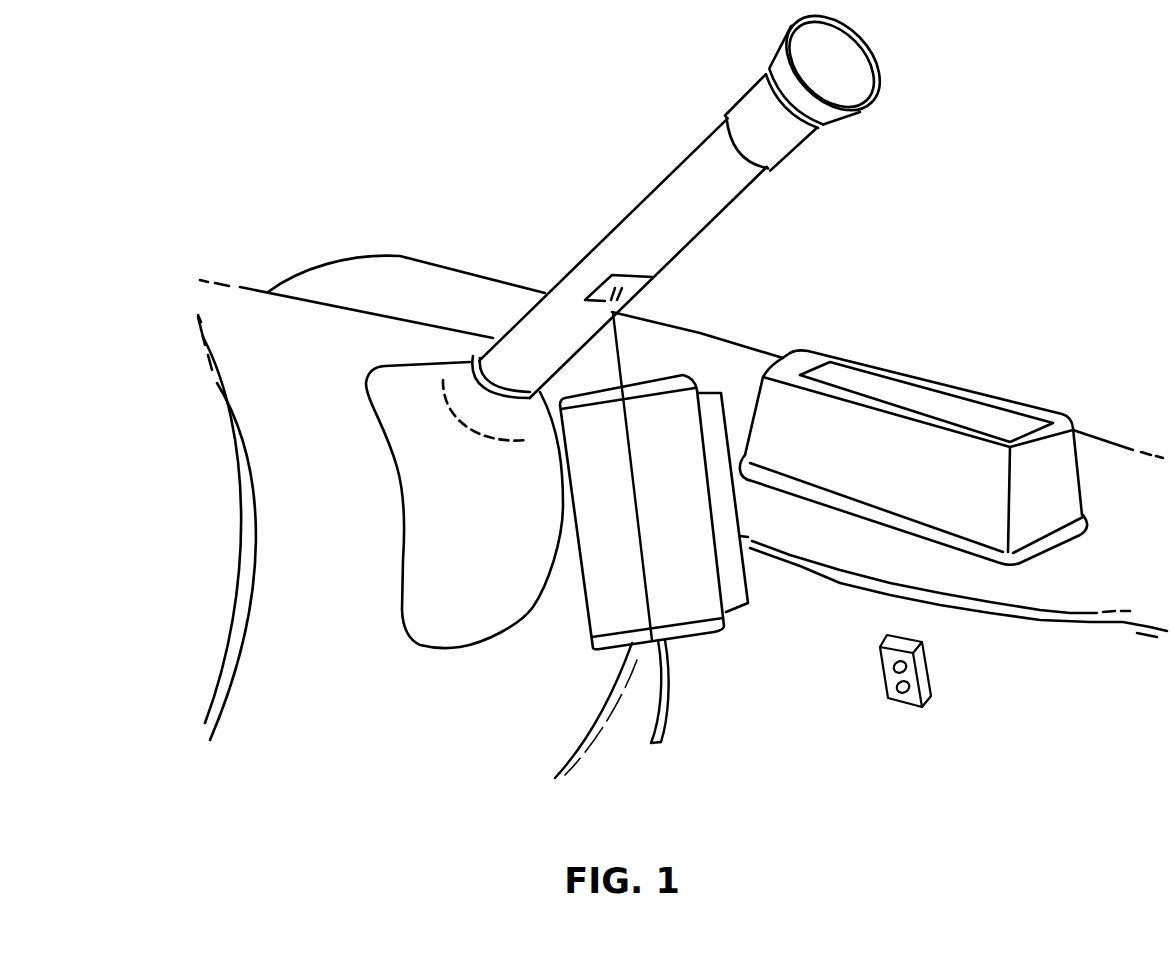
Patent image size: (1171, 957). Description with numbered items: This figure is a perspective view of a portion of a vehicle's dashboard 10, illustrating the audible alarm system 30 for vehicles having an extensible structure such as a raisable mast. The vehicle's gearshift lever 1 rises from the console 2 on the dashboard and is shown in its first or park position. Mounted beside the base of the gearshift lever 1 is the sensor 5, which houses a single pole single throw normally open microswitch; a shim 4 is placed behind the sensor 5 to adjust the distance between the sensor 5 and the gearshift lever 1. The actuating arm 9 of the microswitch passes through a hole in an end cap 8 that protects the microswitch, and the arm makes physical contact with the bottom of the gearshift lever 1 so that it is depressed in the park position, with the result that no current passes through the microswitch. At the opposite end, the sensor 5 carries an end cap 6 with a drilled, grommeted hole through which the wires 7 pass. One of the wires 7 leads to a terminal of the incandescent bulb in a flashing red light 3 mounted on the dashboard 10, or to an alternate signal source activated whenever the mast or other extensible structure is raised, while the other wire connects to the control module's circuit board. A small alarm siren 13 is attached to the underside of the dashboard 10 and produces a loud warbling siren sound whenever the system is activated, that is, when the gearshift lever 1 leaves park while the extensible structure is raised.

The gearshift lever 1 is at (640, 227).
The center console 2 is at (337, 340).
The flashing red light 3 is at (942, 400).
The shim 4 is at (748, 604).
The sensor 5 is at (590, 641).
The end cap 6 is at (693, 637).
The wires 7 is at (667, 710).
The end cap 8 is at (663, 370).
The actuating arm 9 is at (593, 320).
The dashboard 10 is at (1002, 712).
The alarm siren 13 is at (897, 700).
The audible alarm system 30 is at (995, 280).